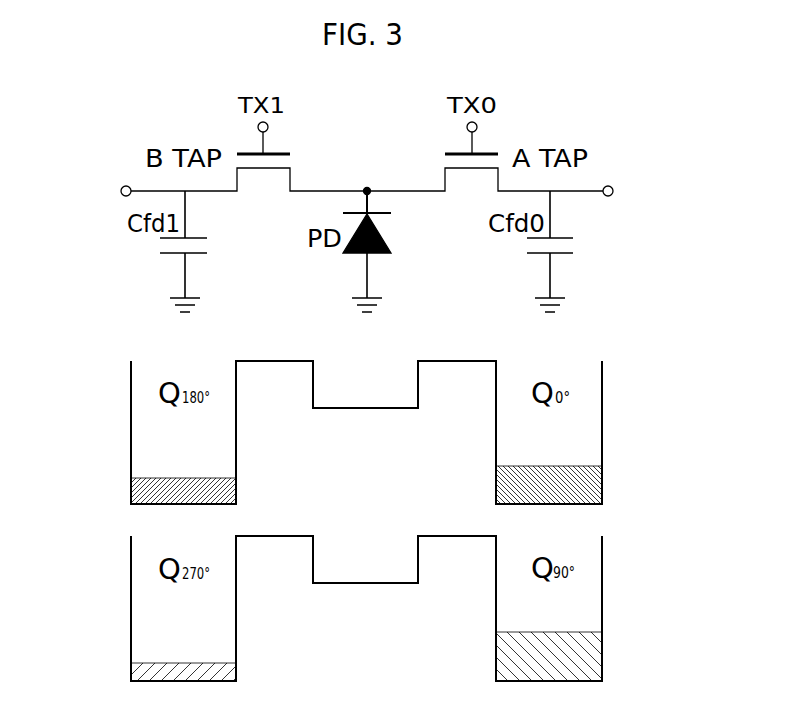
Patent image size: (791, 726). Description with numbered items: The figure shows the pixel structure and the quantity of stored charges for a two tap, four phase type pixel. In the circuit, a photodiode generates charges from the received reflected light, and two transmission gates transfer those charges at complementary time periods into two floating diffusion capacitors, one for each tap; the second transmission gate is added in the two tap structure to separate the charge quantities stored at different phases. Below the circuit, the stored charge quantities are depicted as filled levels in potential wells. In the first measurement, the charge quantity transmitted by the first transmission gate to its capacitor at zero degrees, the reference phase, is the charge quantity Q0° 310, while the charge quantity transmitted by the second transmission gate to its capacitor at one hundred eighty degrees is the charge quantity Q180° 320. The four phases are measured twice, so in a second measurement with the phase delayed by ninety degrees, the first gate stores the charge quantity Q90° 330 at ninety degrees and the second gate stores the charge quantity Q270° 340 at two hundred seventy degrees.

The charge quantity Q0° 310 is at (593, 488).
The charge quantity Q180° 320 is at (138, 487).
The charge quantity Q90° 330 is at (593, 673).
The charge quantity Q270° 340 is at (138, 672).